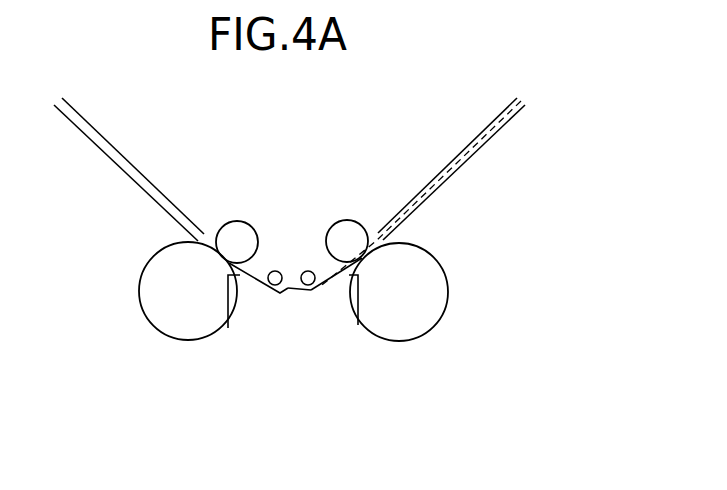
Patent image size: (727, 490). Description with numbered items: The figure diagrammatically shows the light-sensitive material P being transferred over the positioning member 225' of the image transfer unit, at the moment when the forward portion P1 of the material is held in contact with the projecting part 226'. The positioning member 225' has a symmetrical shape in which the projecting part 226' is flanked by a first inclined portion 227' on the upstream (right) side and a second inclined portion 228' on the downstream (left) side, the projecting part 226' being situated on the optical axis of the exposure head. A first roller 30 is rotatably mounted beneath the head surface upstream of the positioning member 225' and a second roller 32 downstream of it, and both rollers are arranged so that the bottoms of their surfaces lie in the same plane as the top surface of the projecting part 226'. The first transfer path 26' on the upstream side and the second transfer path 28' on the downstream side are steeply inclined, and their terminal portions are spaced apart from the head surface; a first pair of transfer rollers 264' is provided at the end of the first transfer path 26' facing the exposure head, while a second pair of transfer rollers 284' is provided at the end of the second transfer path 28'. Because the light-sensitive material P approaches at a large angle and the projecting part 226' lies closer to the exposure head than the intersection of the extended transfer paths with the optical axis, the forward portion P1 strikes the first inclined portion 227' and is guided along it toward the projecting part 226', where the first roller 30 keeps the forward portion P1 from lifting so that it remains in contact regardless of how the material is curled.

The second transfer path 28' is at (129, 167).
The first transfer path 26' is at (451, 151).
The light-sensitive material P is at (527, 96).
The forward portion of the light-sensitive material P1 is at (290, 281).
The second pair of transfer rollers 284' is at (166, 325).
The first pair of transfer rollers 264' is at (439, 303).
The second roller 32 is at (275, 271).
The first roller 30 is at (306, 271).
The second inclined portion 228' is at (242, 325).
The projecting part 226' is at (265, 353).
The first inclined portion 227' is at (307, 337).
The positioning member 225' is at (356, 345).